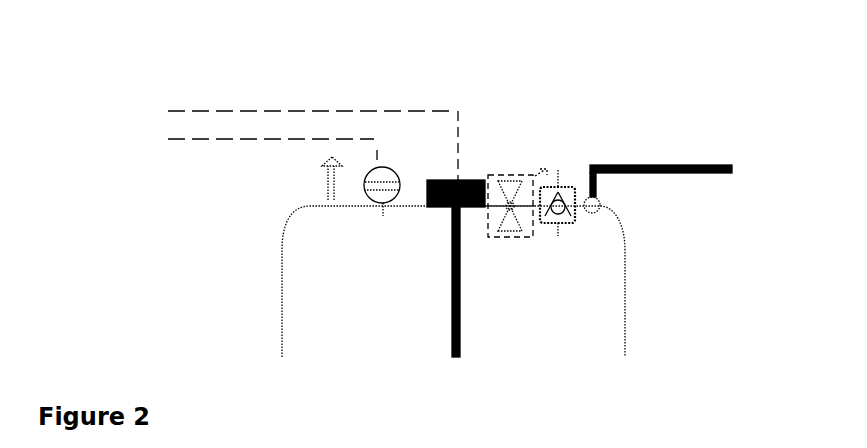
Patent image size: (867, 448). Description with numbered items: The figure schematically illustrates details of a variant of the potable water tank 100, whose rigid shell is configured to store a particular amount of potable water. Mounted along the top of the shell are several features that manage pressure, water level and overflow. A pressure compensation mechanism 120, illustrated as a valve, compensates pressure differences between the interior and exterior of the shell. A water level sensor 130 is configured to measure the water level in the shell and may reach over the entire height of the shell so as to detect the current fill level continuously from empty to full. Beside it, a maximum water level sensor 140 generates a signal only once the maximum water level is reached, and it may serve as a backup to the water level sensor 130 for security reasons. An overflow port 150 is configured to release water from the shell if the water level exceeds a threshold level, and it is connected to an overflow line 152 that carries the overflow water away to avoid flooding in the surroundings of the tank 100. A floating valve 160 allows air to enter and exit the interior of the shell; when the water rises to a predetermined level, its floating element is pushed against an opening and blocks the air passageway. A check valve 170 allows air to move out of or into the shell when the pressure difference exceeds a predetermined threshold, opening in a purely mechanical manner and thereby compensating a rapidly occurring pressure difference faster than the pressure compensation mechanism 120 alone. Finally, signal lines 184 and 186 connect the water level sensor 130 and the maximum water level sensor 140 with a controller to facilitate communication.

The potable water tank 100 is at (660, 131).
The pressure compensation mechanism 120 is at (511, 187).
The water level sensor 130 is at (452, 180).
The maximum water level sensor 140 is at (383, 165).
The overflow port 150 is at (583, 197).
The overflow line 152 is at (622, 165).
The floating valve 160 is at (565, 187).
The check valve 170 is at (329, 150).
The signal line 184 is at (222, 111).
The signal line 186 is at (201, 139).